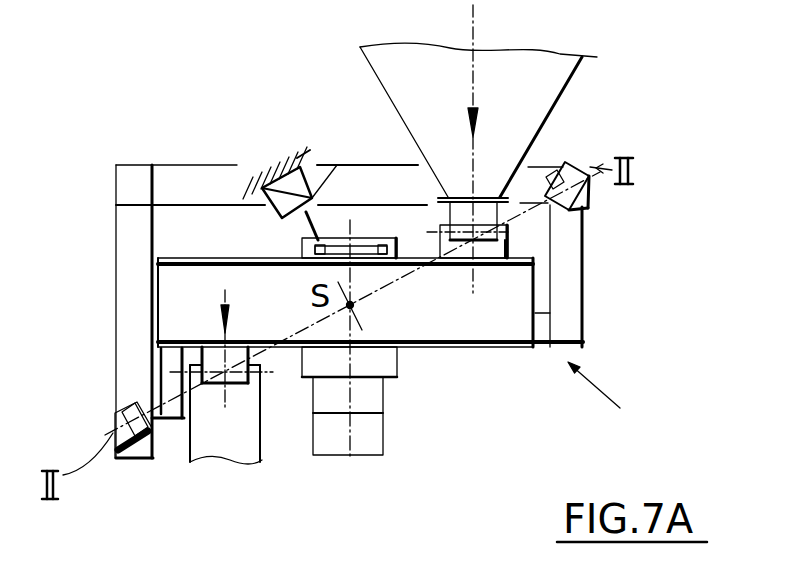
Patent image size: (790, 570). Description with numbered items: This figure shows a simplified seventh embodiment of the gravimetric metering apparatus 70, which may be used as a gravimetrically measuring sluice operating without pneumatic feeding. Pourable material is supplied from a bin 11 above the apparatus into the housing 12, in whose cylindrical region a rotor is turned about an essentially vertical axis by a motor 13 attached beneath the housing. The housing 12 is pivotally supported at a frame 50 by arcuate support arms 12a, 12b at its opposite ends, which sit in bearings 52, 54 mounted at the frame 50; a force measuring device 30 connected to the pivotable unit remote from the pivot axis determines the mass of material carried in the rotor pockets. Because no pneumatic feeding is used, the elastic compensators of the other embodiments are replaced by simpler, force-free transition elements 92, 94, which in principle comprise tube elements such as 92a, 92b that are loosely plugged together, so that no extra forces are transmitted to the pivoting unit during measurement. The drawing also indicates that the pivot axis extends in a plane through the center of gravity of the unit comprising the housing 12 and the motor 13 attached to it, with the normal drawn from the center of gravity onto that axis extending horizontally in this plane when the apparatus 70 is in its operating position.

The bin 11 is at (568, 85).
The housing 12 is at (483, 332).
The arcuate support arm 12a is at (573, 308).
The arcuate support arm 12b is at (163, 382).
The motor 13 is at (377, 403).
The force measuring device 30 is at (335, 167).
The frame 50 is at (193, 172).
The bearing 52 is at (117, 407).
The bearing 54 is at (565, 162).
The gravimetric metering apparatus 70 is at (615, 399).
The force-free transition element 92 is at (520, 238).
The tube element 92a is at (510, 248).
The tube element 92b is at (487, 228).
The force-free transition element 94 is at (212, 393).